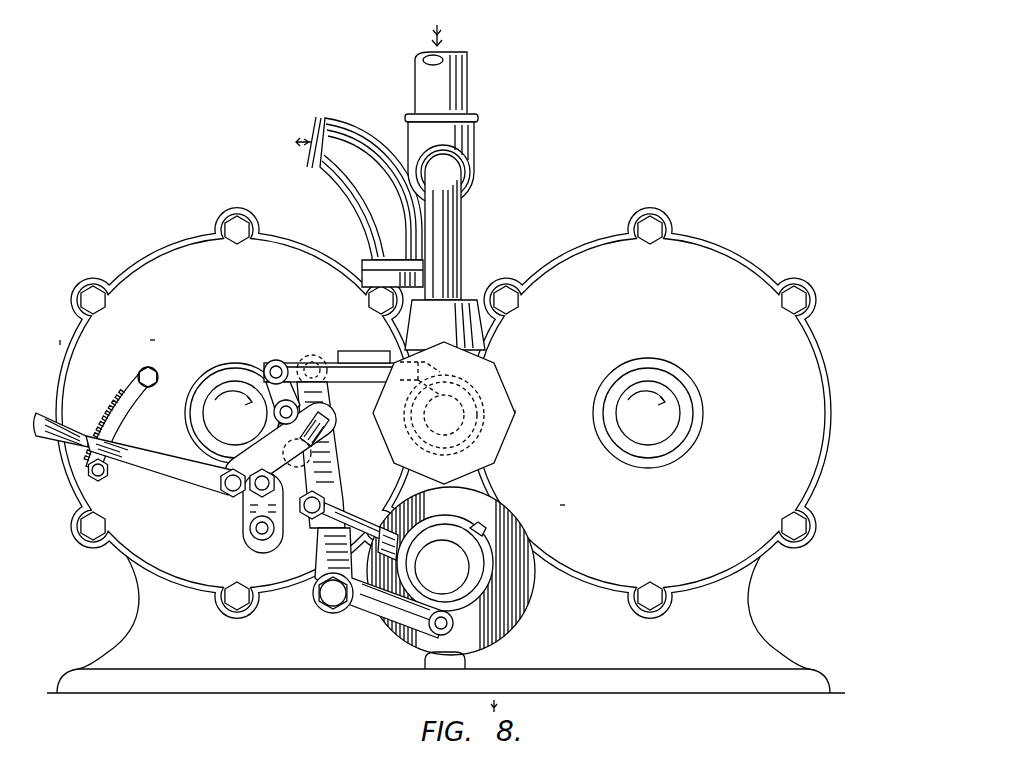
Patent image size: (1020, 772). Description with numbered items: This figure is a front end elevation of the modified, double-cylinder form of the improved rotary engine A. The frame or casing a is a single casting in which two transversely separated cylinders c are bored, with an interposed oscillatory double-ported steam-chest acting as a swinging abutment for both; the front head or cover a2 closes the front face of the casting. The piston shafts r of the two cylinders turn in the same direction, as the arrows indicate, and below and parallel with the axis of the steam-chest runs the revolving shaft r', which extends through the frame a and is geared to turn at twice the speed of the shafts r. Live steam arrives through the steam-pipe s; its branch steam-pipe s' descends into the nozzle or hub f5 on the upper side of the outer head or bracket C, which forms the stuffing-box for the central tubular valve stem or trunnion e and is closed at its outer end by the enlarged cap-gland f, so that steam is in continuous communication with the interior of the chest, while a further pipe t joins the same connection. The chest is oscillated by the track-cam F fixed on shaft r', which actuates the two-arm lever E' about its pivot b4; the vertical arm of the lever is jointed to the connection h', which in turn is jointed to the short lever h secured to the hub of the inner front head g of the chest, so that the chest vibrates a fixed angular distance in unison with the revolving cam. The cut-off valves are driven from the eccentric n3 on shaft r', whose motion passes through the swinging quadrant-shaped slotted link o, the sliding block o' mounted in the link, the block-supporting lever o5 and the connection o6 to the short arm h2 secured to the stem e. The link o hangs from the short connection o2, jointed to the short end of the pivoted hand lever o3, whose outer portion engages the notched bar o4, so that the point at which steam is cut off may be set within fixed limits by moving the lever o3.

The rotary engine A is at (78, 286).
The frame or casing a is at (136, 597).
The front head or cover a2 is at (367, 405).
The cylinder c is at (152, 252).
The piston rod or shaft r is at (444, 413).
The revolving shaft r' is at (442, 567).
The supply pipe s is at (449, 73).
The branch steam-pipe s' is at (452, 211).
The branch pipe t is at (358, 188).
The nozzle or hub f5 is at (478, 334).
The cap-gland f is at (494, 378).
The outer head or bracket C is at (527, 406).
The tubular valve stem e is at (428, 419).
The short lever h is at (333, 352).
The connection h' is at (363, 339).
The short arm h2 is at (398, 393).
The quadrant-shaped slotted link o is at (326, 455).
The sliding block o' is at (290, 446).
The short connection o2 is at (246, 514).
The hand lever o3 is at (156, 462).
The notched bar o4 is at (116, 401).
The block-supporting lever o5 is at (265, 368).
The connection o6 is at (311, 356).
The track-cam F is at (528, 613).
The eccentric n3 is at (445, 563).
The inner front head g is at (474, 527).
The pivot bolt b4 is at (318, 600).
The two-arm lever E' is at (384, 589).